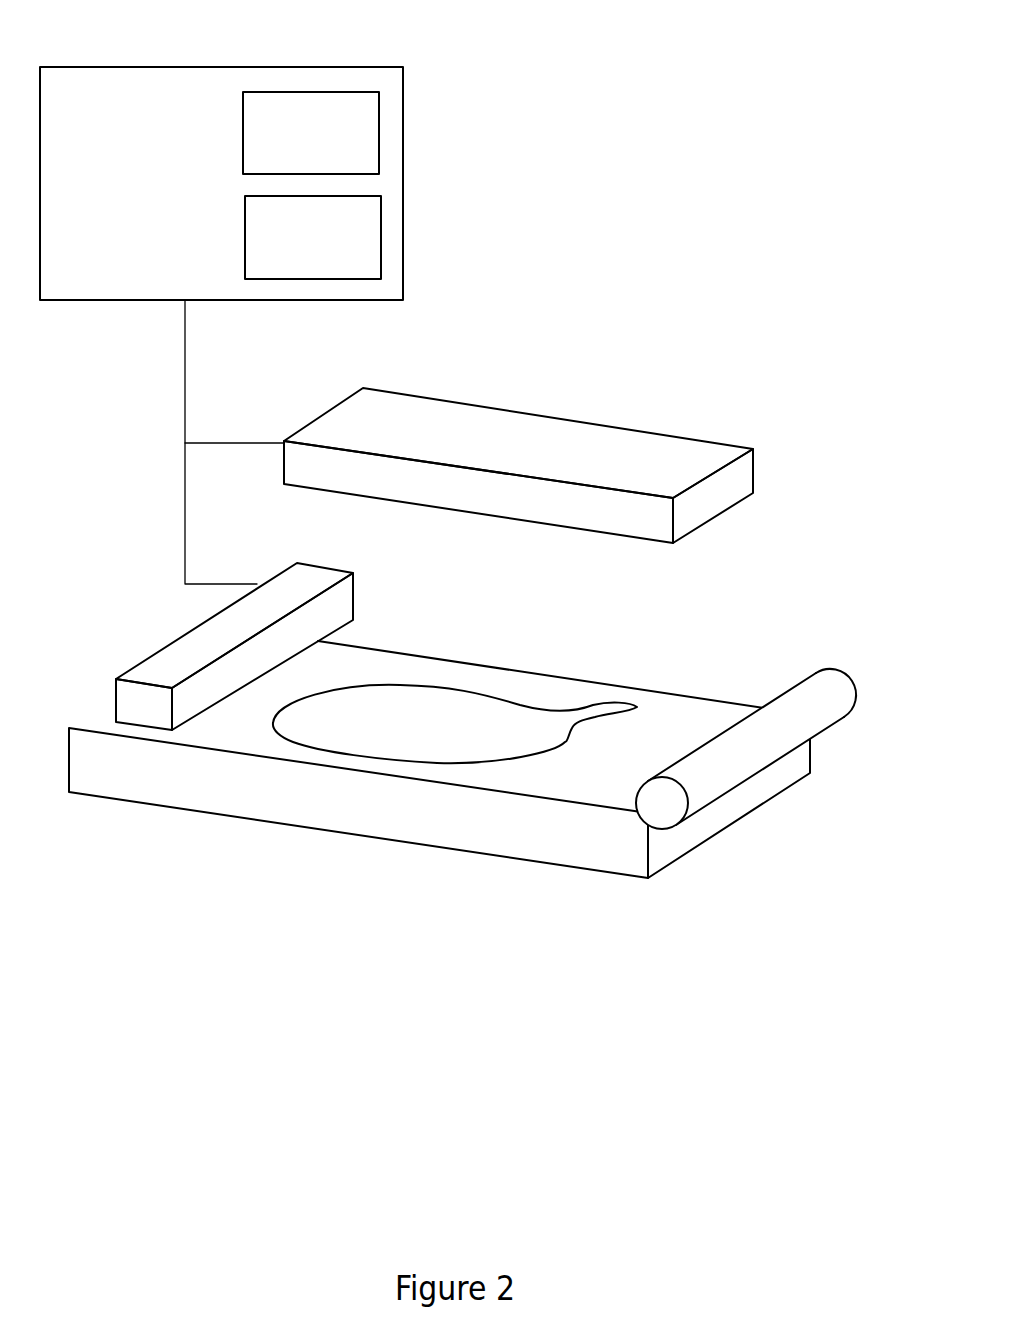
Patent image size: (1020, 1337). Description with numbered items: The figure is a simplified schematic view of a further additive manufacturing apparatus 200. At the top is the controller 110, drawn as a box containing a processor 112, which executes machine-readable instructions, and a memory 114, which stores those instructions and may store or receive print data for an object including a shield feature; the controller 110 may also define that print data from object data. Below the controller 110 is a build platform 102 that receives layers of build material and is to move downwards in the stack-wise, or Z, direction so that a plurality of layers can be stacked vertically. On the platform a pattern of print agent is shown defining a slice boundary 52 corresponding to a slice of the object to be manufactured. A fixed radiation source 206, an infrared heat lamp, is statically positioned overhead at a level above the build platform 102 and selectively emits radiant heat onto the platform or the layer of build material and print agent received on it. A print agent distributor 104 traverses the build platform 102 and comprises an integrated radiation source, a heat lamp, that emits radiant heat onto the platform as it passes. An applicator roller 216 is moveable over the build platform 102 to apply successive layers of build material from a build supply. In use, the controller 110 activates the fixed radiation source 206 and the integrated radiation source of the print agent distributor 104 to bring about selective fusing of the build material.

The additive manufacturing apparatus 200 is at (605, 193).
The controller 110 is at (300, 67).
The processor 112 is at (311, 133).
The memory 114 is at (313, 237).
The fixed radiation source 206 is at (756, 466).
The print agent distributor 104 is at (356, 575).
The build platform 102 is at (653, 692).
The slice boundary 52 is at (308, 745).
The applicator roller 216 is at (822, 732).